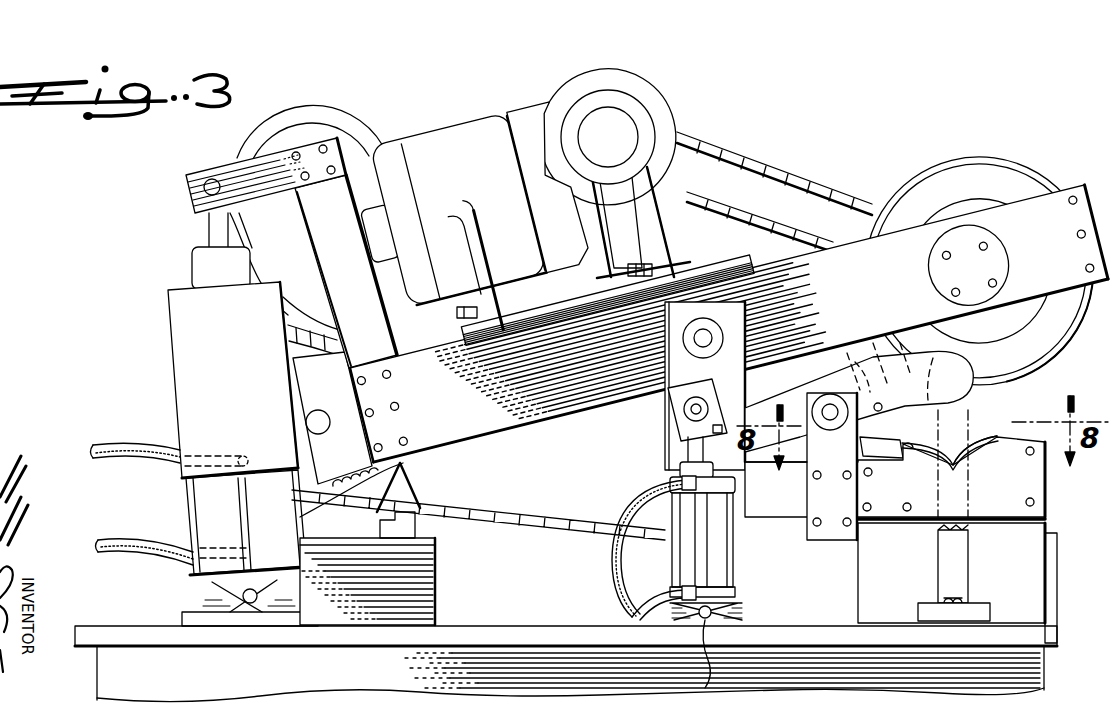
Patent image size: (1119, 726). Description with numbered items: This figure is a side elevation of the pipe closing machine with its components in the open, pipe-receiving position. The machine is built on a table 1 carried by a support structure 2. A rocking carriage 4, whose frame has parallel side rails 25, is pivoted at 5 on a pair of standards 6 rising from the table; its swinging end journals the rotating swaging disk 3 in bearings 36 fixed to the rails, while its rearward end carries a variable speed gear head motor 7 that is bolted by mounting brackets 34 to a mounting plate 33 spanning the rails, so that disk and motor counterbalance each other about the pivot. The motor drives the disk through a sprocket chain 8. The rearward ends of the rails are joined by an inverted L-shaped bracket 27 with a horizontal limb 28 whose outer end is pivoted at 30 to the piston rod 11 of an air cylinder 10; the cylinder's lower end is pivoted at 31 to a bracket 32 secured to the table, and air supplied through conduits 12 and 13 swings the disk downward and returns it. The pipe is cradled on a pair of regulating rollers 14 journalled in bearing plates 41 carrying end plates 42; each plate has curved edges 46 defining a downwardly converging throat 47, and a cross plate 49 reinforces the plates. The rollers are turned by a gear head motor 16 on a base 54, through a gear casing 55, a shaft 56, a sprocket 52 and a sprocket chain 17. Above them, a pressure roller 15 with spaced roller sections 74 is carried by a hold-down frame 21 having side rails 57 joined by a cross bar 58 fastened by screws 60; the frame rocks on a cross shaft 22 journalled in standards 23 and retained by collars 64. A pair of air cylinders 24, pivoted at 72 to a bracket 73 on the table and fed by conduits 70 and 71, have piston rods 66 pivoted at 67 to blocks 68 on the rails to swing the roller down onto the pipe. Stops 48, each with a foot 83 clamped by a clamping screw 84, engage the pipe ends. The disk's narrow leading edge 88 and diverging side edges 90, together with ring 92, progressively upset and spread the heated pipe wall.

The table 1 is at (100, 620).
The support structure 2 is at (512, 666).
The swaging disk 3 is at (975, 156).
The carriage 4 is at (1062, 184).
The pivot 5 is at (700, 336).
The standards 6 is at (730, 390).
The gear head motor 7 is at (474, 128).
The sprocket chain 8 is at (720, 146).
The air cylinder 10 is at (192, 324).
The piston rod 11 is at (204, 237).
The conduit 12 is at (150, 455).
The conduit 13 is at (150, 545).
The regulating rollers 14 is at (988, 438).
The pressure roller 15 is at (935, 362).
The gear head motor 16 is at (314, 128).
The sprocket chain 17 is at (505, 512).
The hold-down frame 21 is at (888, 366).
The cross shaft 22 is at (829, 406).
The standards 23 is at (834, 540).
The air cylinders 24 is at (722, 556).
The side rails 25 is at (576, 400).
The bracket 27 is at (328, 246).
The horizontal limb 28 is at (258, 182).
The pivot 30 is at (204, 188).
The pivot 31 is at (262, 594).
The bracket 32 is at (305, 628).
The mounting plate 33 is at (534, 312).
The mounting brackets 34 is at (665, 272).
The bearings 36 is at (1008, 264).
The bearing plates 41 is at (1028, 548).
The end plates 42 is at (1040, 486).
The curved edges 46 is at (976, 448).
The throat 47 is at (963, 440).
The stops 48 is at (946, 552).
The cross plate 49 is at (1050, 586).
The sprocket 52 is at (312, 450).
The base 54 is at (438, 590).
The gear casing 55 is at (410, 482).
The shaft 56 is at (319, 418).
The side rails 57 is at (795, 452).
The cross bar 58 is at (860, 368).
The screws 60 is at (884, 440).
The collars 64 is at (836, 428).
The piston rod 66 is at (670, 450).
The pivot 67 is at (668, 415).
The block 68 is at (694, 398).
The conduit 70 is at (660, 596).
The conduit 71 is at (612, 550).
The pivot 72 is at (707, 688).
The bracket 73 is at (745, 613).
The roller sections 74 is at (884, 418).
The foot 83 is at (918, 610).
The clamping screw 84 is at (964, 600).
The leading edge 88 is at (1052, 353).
The side edges 90 is at (1013, 182).
The wheel ring 92 is at (924, 188).